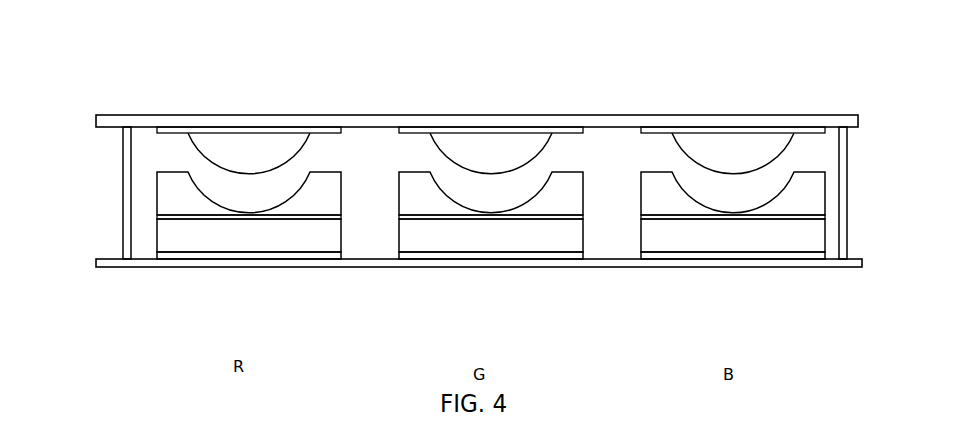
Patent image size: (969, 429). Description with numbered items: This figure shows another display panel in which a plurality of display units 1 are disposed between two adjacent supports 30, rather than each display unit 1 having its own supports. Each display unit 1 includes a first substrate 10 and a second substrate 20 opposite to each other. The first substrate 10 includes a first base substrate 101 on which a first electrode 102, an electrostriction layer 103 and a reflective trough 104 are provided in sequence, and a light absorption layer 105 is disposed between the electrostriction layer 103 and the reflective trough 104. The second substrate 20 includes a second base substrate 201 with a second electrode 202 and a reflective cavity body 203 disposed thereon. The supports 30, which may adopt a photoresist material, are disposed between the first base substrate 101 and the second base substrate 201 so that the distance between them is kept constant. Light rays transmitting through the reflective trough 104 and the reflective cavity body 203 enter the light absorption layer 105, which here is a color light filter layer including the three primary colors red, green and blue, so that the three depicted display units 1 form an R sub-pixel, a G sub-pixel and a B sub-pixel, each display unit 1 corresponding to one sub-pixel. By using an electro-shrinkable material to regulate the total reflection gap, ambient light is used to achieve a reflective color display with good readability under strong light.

The display unit 1 is at (732, 90).
The second substrate 20 is at (477, 109).
The second base substrate 201 is at (270, 123).
The second electrode 202 is at (252, 128).
The reflective cavity body 203 is at (218, 143).
The first substrate 10 is at (479, 257).
The first base substrate 101 is at (250, 263).
The first electrode 102 is at (236, 255).
The electrostriction layer 103 is at (218, 244).
The reflective trough 104 is at (173, 208).
The light absorption layer 105 is at (191, 218).
The support 30 is at (125, 199).